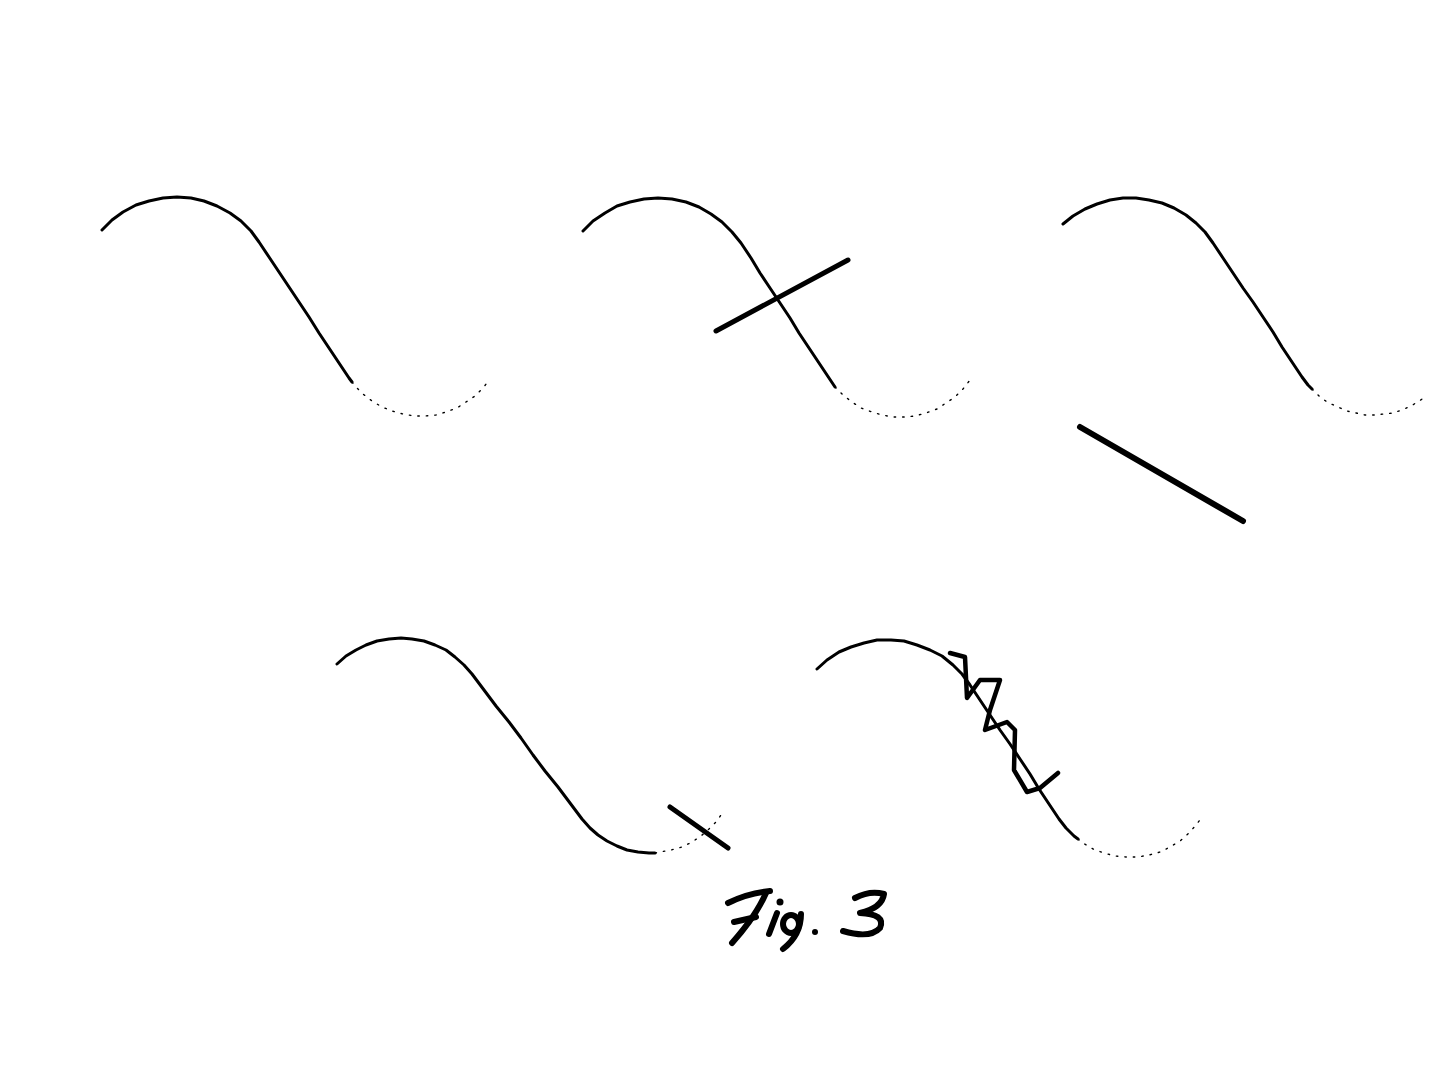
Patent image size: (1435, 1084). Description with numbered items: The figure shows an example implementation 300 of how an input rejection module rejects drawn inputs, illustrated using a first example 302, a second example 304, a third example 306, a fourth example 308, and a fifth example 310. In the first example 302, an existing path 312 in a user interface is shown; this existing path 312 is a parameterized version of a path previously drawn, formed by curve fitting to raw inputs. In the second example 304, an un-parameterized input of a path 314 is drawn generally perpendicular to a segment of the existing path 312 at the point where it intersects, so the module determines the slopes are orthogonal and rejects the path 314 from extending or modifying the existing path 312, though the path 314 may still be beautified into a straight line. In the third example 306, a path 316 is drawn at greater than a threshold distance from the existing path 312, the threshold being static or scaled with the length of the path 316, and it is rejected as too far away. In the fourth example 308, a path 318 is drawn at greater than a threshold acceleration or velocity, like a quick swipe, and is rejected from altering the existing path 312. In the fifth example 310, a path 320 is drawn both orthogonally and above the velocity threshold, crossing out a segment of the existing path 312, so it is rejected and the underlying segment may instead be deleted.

The example implementation 300 is at (202, 106).
The first example 302 is at (156, 157).
The second example 304 is at (581, 157).
The third example 306 is at (1075, 157).
The fourth example 308 is at (329, 620).
The fifth example 310 is at (814, 620).
The existing path 312 is at (755, 492).
The path 314 is at (843, 258).
The path 316 is at (1152, 469).
The path 318 is at (688, 813).
The path 320 is at (1000, 685).